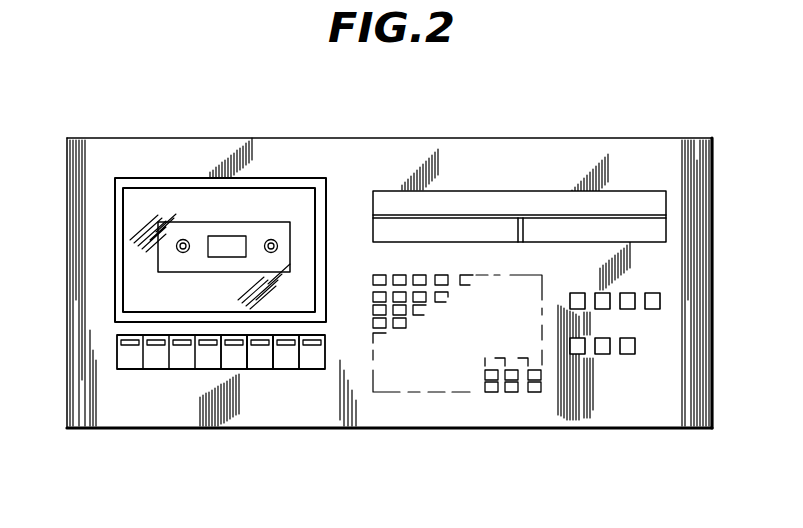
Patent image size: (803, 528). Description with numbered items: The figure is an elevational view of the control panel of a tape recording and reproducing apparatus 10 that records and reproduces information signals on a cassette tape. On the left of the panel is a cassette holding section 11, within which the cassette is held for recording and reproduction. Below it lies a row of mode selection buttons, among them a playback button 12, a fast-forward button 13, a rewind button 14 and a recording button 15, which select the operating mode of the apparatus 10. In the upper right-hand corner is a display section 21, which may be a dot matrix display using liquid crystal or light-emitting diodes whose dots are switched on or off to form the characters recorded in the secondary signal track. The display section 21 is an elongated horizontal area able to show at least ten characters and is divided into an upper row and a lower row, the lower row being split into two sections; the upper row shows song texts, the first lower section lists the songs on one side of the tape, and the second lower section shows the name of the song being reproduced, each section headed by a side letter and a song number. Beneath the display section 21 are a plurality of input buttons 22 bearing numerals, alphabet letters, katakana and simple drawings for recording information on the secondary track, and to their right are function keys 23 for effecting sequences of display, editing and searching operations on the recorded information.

The tape recording and reproducing apparatus 10 is at (113, 135).
The cassette holding section 11 is at (135, 272).
The playback button 12 is at (236, 346).
The fast-forward button 13 is at (262, 346).
The rewind button 14 is at (184, 346).
The recording button 15 is at (289, 346).
The display section 21 is at (564, 188).
The input buttons 22 is at (373, 278).
The function keys 23 is at (576, 302).